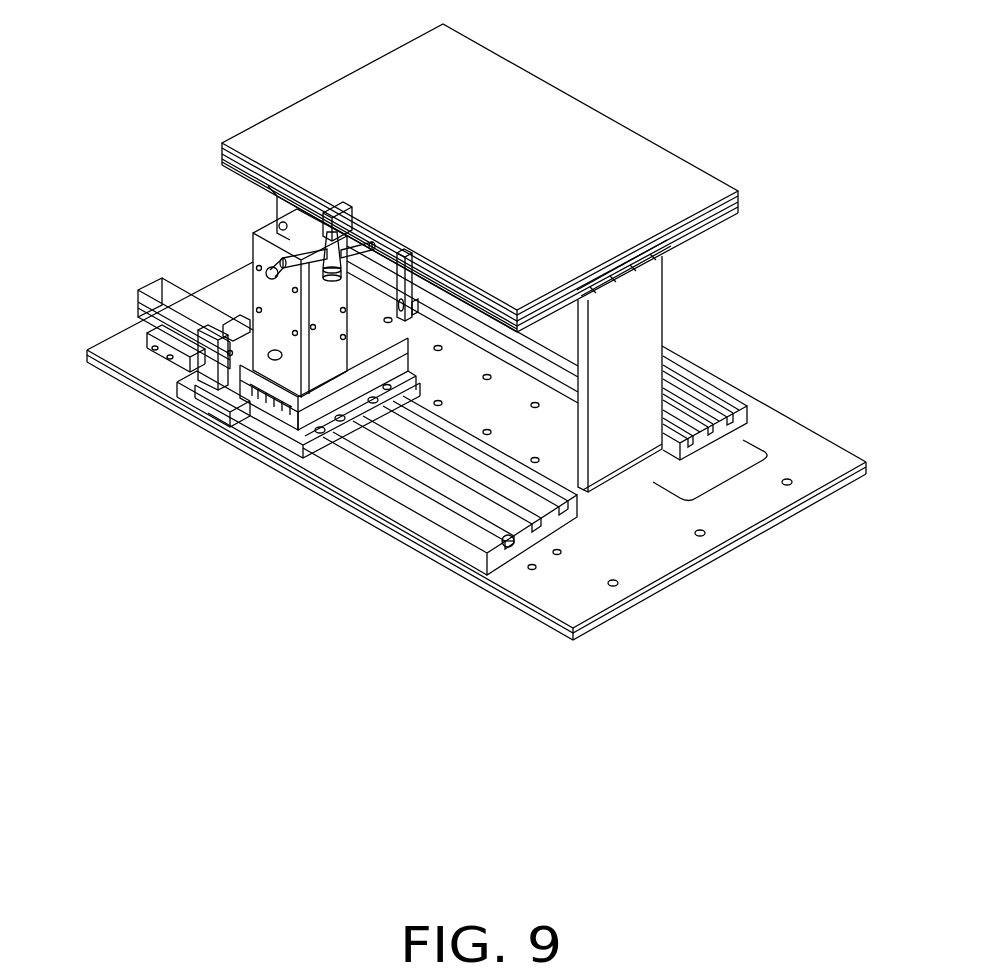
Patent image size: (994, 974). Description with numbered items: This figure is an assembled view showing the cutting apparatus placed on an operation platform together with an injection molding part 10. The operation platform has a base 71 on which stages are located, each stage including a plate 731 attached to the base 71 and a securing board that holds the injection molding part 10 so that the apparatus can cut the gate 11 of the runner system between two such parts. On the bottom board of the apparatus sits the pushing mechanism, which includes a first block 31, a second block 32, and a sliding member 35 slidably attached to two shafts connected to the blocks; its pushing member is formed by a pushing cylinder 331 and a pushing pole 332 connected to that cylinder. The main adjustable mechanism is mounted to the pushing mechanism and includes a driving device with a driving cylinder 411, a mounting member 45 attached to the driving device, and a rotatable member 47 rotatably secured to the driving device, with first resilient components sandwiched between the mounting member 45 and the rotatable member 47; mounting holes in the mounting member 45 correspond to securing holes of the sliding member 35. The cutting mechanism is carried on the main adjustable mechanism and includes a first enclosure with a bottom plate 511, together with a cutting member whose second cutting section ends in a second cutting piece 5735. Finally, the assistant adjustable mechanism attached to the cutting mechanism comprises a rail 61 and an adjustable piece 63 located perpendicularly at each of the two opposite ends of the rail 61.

The injection molding part 10 is at (597, 143).
The gate 11 is at (273, 220).
The first block 31 is at (228, 374).
The second block 32 is at (353, 383).
The sliding member 35 is at (287, 415).
The mounting member 45 is at (302, 407).
The rotatable member 47 is at (380, 385).
The rail 61 is at (373, 283).
The adjustable piece 63 is at (432, 268).
The base 71 is at (653, 557).
The pushing cylinder 331 is at (160, 295).
The pushing pole 332 is at (225, 348).
The driving cylinder 411 is at (375, 383).
The bottom plate 511 is at (226, 383).
The plate 731 is at (630, 320).
The second cutting piece 5735 is at (357, 213).